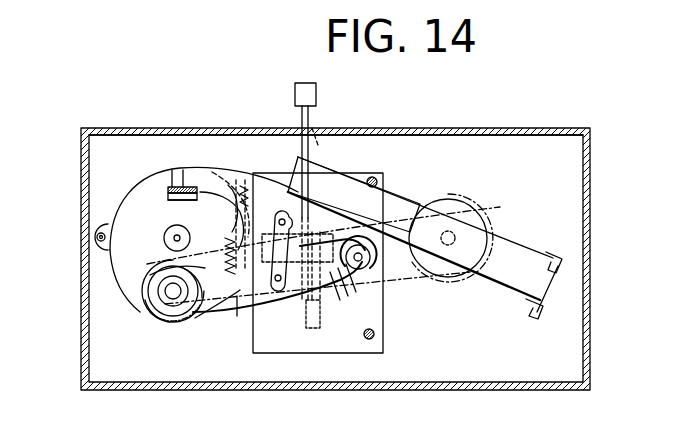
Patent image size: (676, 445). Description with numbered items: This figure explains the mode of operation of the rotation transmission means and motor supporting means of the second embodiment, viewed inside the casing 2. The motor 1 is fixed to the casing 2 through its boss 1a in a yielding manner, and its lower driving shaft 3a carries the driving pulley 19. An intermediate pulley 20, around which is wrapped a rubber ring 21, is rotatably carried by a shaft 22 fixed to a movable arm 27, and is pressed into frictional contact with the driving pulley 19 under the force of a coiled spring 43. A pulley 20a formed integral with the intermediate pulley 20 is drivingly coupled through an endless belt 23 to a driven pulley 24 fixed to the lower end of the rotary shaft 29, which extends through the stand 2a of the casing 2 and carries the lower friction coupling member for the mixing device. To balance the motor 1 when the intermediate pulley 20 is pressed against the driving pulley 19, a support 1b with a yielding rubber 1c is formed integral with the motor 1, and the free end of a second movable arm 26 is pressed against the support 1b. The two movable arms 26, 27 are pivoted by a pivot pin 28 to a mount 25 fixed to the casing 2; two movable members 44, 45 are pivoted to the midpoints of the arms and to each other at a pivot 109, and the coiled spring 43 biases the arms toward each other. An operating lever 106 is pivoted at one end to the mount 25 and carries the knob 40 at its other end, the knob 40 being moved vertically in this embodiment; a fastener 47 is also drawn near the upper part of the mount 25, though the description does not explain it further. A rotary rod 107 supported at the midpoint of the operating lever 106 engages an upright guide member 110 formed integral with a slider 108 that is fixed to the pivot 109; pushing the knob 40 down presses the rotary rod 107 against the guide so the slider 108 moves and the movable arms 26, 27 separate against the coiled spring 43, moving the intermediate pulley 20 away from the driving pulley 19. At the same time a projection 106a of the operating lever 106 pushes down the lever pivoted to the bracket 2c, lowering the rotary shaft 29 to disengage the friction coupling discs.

The motor 1 is at (150, 196).
The boss 1a is at (97, 238).
The support 1b is at (168, 199).
The yielding rubber 1c is at (178, 186).
The casing 2 is at (82, 350).
The stand 2a is at (556, 128).
The bracket 2c is at (556, 254).
The lower driving shaft 3a is at (170, 250).
The driving pulley 19 is at (172, 239).
The intermediate pulley 20 is at (154, 315).
The pulley 20a is at (186, 298).
The rubber ring 21 is at (150, 322).
The shaft 22 is at (168, 292).
The endless belt 23 is at (430, 288).
The driven pulley 24 is at (458, 272).
The mount 25 is at (368, 315).
The movable arm 26 is at (247, 194).
The movable arm 27 is at (235, 319).
The pivot pin 28 is at (379, 280).
The rotary shaft 29 is at (448, 231).
The knob 40 is at (295, 93).
The coiled spring 43 is at (226, 252).
The movable member 44 is at (275, 215).
The movable member 45 is at (349, 340).
The screw 47 is at (374, 179).
The operating lever 106 is at (300, 124).
The projection 106a is at (314, 133).
The rotary rod 107 is at (354, 194).
The slider 108 is at (310, 308).
The pivot 109 is at (318, 263).
The upright guide member 110 is at (374, 204).